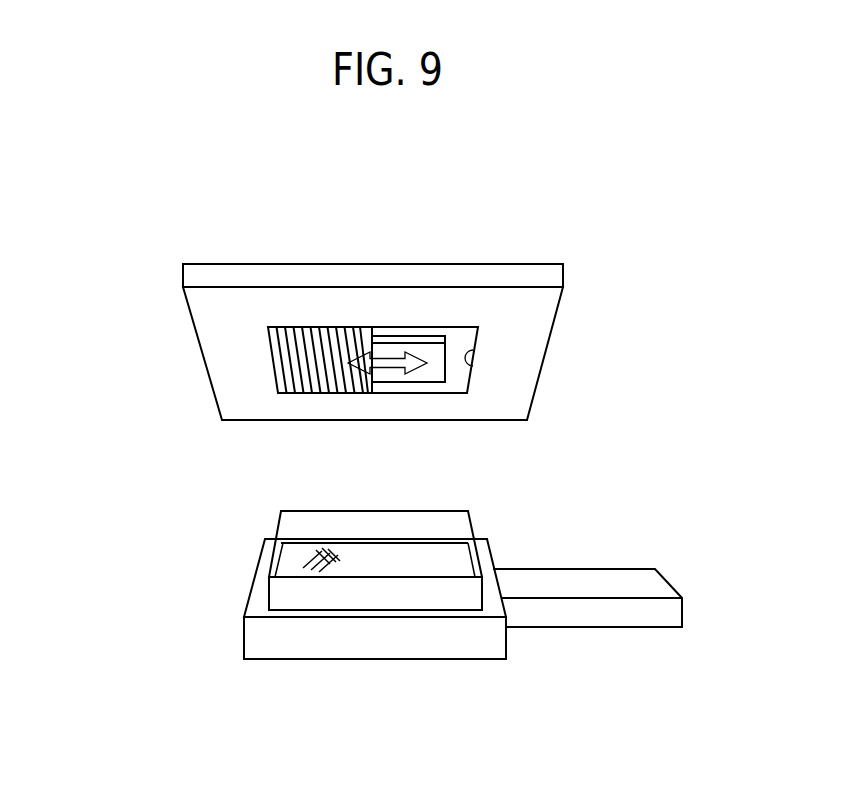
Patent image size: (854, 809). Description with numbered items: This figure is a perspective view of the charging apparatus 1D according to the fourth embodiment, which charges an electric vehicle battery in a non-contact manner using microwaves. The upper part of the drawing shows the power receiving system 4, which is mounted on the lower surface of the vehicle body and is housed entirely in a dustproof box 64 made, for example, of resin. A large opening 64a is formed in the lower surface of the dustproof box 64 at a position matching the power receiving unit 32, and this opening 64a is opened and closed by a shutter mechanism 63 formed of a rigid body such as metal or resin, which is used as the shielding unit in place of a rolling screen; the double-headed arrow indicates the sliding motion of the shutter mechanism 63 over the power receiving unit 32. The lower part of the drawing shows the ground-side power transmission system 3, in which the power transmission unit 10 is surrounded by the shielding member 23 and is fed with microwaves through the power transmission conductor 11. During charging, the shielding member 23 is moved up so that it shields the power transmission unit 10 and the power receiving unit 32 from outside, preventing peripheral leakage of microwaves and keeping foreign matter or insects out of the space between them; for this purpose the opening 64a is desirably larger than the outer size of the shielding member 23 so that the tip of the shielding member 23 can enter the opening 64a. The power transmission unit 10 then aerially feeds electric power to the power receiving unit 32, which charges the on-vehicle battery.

The charging apparatus 1D is at (172, 530).
The power transmission system 3 is at (492, 593).
The power receiving system 4 is at (421, 330).
The power transmission unit 10 is at (320, 566).
The power transmission conductor 11 is at (648, 587).
The shielding member 23 is at (370, 594).
The power receiving unit 32 is at (428, 372).
The shutter mechanism 63 is at (315, 372).
The dustproof box 64 is at (467, 277).
The opening 64a is at (472, 366).